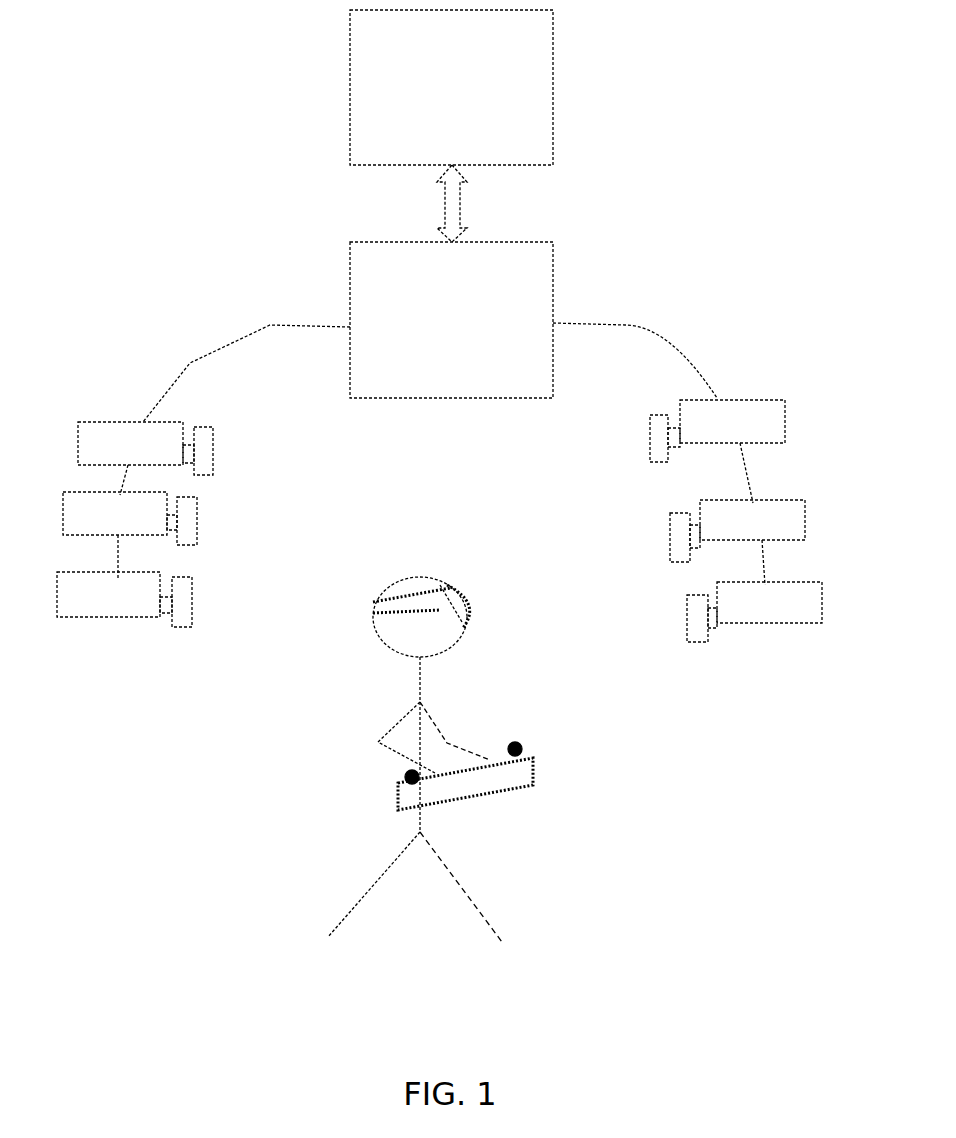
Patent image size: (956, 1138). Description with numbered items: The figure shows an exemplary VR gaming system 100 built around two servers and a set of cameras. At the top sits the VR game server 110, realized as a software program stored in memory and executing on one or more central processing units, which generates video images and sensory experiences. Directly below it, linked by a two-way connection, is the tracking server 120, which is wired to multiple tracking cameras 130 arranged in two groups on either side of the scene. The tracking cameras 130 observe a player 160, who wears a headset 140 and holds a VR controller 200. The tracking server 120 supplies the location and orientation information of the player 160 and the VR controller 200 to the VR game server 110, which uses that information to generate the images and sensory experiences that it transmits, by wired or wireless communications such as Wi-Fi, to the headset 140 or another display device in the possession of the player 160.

The VR gaming system 100 is at (178, 108).
The VR game server 110 is at (553, 120).
The tracking server 120 is at (553, 288).
The tracking cameras 130 is at (213, 462).
The headset 140 is at (463, 588).
The player 160 is at (472, 905).
The VR controller 200 is at (532, 767).